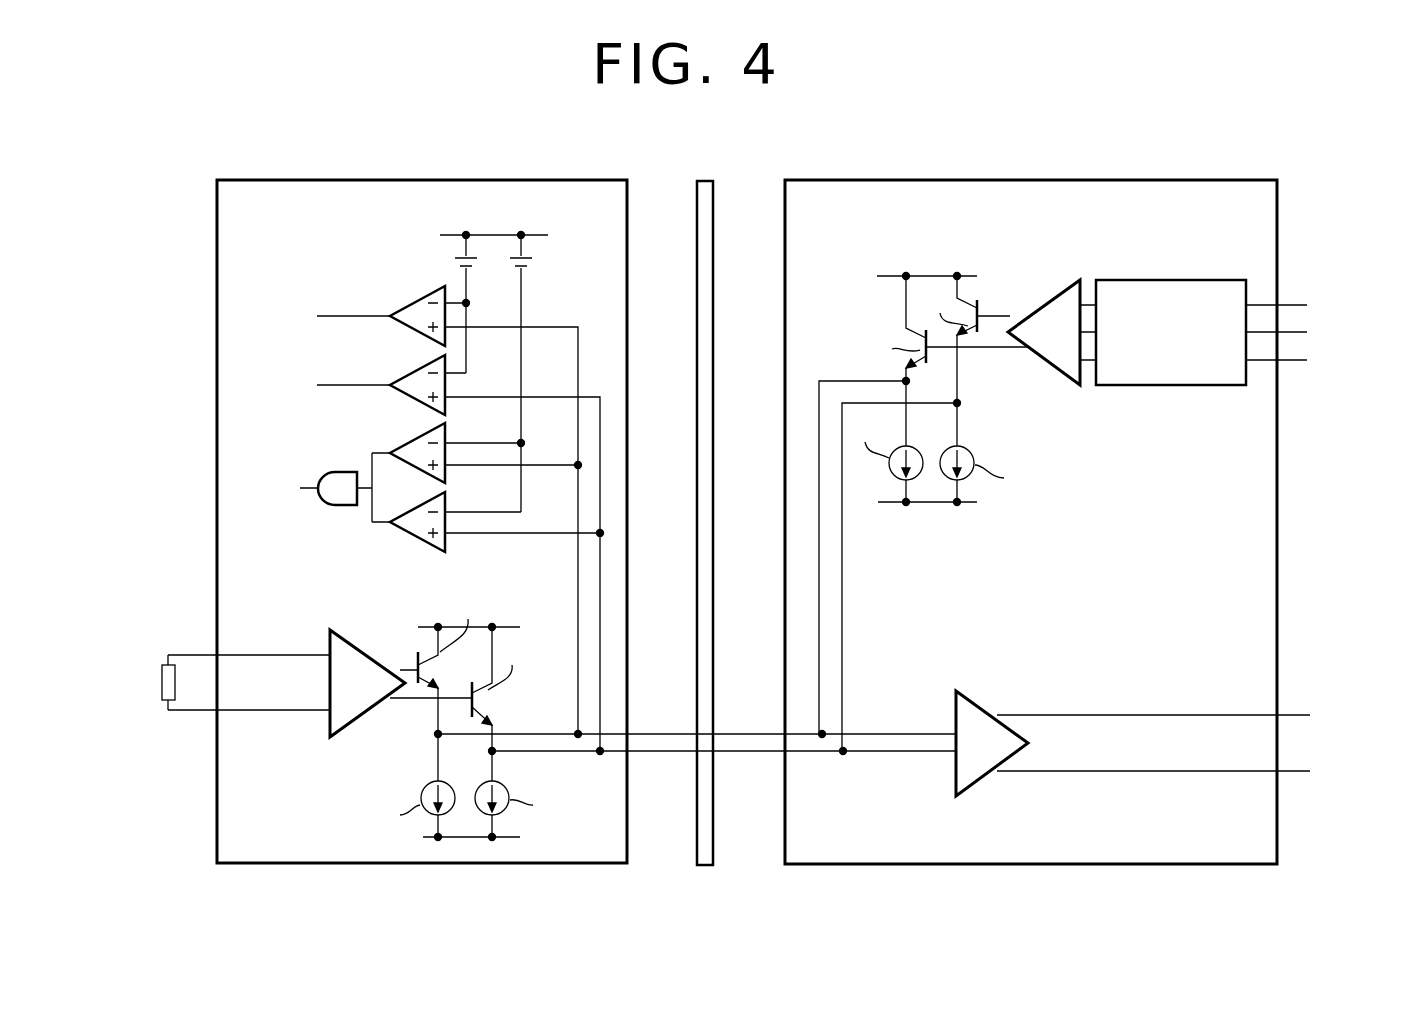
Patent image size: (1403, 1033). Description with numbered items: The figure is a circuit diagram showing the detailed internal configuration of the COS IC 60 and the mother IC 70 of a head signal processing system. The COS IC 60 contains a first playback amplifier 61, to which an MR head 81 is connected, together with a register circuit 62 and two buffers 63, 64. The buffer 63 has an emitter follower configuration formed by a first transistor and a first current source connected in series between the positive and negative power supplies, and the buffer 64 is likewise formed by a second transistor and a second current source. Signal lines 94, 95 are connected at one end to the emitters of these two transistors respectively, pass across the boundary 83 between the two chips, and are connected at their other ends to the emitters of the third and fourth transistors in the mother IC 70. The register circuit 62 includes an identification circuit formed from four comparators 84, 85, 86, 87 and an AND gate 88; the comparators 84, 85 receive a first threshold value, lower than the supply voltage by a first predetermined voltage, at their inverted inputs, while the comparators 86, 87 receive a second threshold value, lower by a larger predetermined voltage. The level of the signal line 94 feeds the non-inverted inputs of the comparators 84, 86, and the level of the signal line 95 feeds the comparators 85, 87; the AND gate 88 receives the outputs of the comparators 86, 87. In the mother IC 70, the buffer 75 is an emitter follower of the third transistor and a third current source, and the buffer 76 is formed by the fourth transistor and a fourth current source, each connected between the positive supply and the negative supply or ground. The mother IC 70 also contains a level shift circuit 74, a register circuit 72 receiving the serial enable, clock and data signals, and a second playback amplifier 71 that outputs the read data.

The COS IC 60 is at (318, 180).
The register circuit 62 is at (335, 273).
The comparator 84 is at (414, 330).
The comparator 85 is at (414, 398).
The comparator 86 is at (414, 468).
The comparator 87 is at (414, 537).
The AND gate 88 is at (338, 508).
The MR head 81 is at (160, 684).
The first playback amplifier 61 is at (360, 650).
The buffer 64 is at (524, 706).
The buffer 63 is at (414, 749).
The signal line 94 is at (663, 734).
The signal line 95 is at (662, 755).
The connector 83 is at (704, 181).
The mother IC 70 is at (858, 180).
The buffer 75 is at (860, 363).
The buffer 76 is at (989, 400).
The level shift circuit 74 is at (1040, 306).
The register circuit 72 is at (1058, 280).
The second playback amplifier 71 is at (979, 782).